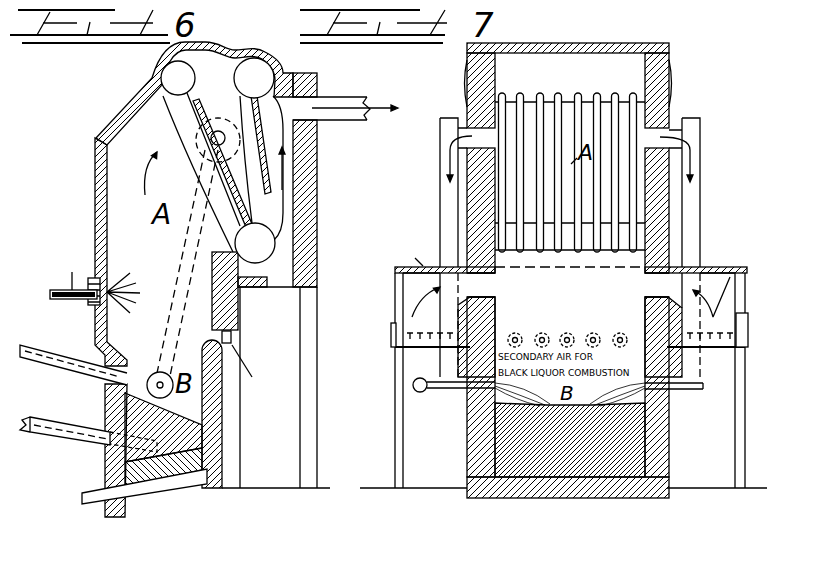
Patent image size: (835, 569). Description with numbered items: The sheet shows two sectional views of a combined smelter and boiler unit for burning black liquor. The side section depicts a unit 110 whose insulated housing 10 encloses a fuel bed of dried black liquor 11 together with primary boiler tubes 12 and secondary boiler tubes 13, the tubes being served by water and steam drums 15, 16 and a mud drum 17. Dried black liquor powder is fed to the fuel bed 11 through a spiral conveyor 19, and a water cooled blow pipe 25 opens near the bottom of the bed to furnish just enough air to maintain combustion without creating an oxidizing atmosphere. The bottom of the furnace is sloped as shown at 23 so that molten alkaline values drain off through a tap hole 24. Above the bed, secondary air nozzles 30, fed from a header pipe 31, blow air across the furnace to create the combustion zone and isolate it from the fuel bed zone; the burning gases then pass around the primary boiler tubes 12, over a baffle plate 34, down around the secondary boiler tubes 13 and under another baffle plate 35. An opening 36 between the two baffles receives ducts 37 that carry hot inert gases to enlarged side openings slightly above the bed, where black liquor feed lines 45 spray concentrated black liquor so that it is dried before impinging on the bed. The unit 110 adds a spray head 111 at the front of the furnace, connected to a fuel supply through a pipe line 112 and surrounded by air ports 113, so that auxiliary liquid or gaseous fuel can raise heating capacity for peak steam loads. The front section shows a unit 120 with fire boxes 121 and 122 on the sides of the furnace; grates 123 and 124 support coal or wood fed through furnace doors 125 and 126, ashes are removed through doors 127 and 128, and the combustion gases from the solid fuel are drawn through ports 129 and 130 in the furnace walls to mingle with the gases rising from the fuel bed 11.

In FIG. 6, the insulated housing 10 is at (96, 185).
In FIG. 6, the fuel bed of dried black liquor 11 is at (160, 462).
In FIG. 7, the fuel bed of dried black liquor 11 is at (578, 455).
In FIG. 6, the primary boiler tubes 12 is at (150, 104).
In FIG. 6, the secondary boiler tubes 13 is at (287, 217).
In FIG. 6, the water and steam drum 15 is at (178, 78).
In FIG. 7, the water and steam drum 15 is at (590, 62).
In FIG. 6, the water and steam drum 16 is at (254, 78).
In FIG. 6, the mud drum 17 is at (255, 243).
In FIG. 7, the mud drum 17 is at (636, 250).
In FIG. 6, the spiral conveyor 19 is at (83, 372).
In FIG. 6, the sloped furnace bottom 23 is at (163, 487).
In FIG. 6, the tap hole 24 is at (90, 504).
In FIG. 6, the water cooled blow pipe 25 is at (95, 440).
In FIG. 6, the secondary air nozzles 30 is at (222, 334).
In FIG. 7, the secondary air nozzles 30 is at (595, 338).
In FIG. 6, the header pipe 31 is at (231, 338).
In FIG. 6, the baffle plate 34 is at (201, 128).
In FIG. 6, the baffle plate 35 is at (265, 139).
In FIG. 6, the opening 36 is at (218, 131).
In FIG. 6, the ducts 37 is at (193, 231).
In FIG. 7, the ducts 37 is at (448, 212).
In FIG. 6, the black liquor feed lines 45 is at (157, 372).
In FIG. 7, the black liquor feed lines 45 is at (450, 403).
In FIG. 6, the combined smelter and boiler unit 110 is at (92, 213).
In FIG. 6, the spray head 111 is at (112, 289).
In FIG. 6, the pipe line 112 is at (72, 272).
In FIG. 6, the air ports 113 is at (92, 279).
In FIG. 7, the combined smelter and boiler unit 120 is at (677, 109).
In FIG. 7, the fire box 121 is at (395, 275).
In FIG. 7, the fire box 122 is at (745, 291).
In FIG. 7, the grate 123 is at (420, 336).
In FIG. 7, the grate 124 is at (745, 351).
In FIG. 7, the furnace door 125 is at (400, 317).
In FIG. 7, the furnace door 126 is at (748, 322).
In FIG. 7, the ash door 127 is at (392, 338).
In FIG. 7, the ash door 128 is at (748, 334).
In FIG. 7, the port 129 is at (480, 287).
In FIG. 7, the port 130 is at (668, 287).